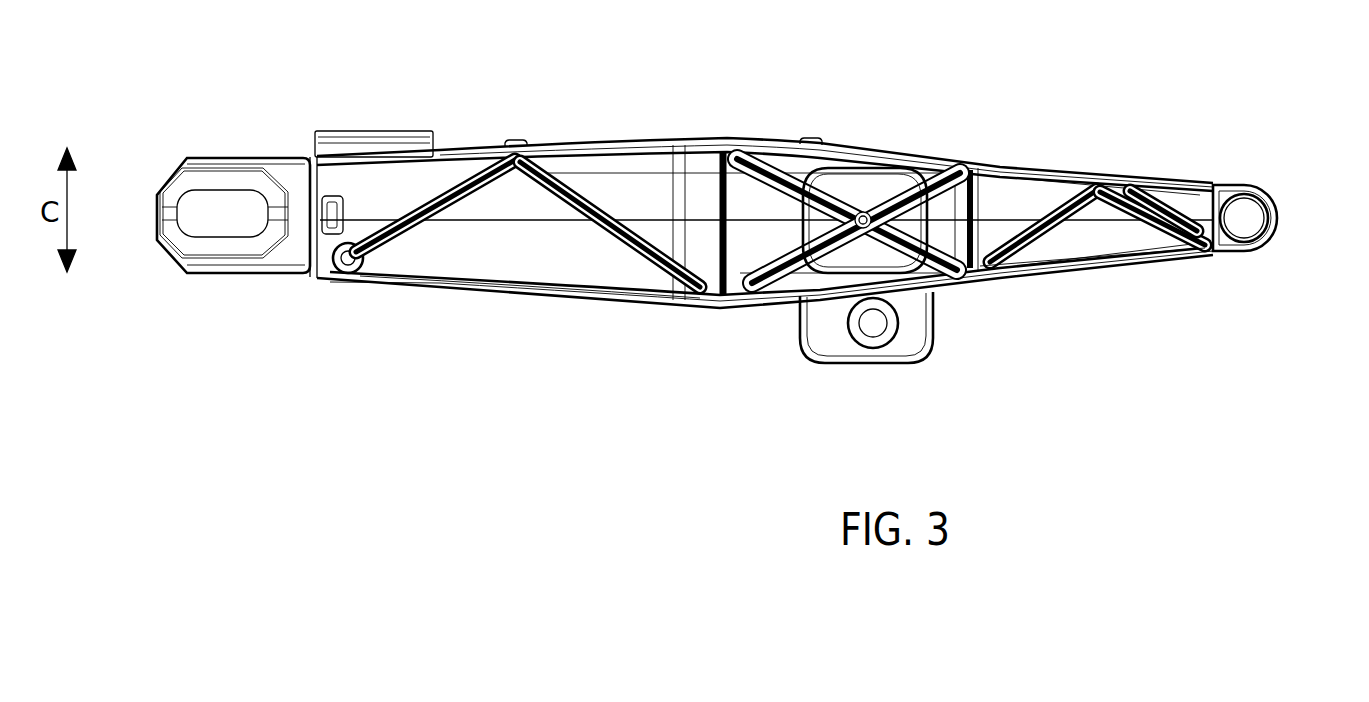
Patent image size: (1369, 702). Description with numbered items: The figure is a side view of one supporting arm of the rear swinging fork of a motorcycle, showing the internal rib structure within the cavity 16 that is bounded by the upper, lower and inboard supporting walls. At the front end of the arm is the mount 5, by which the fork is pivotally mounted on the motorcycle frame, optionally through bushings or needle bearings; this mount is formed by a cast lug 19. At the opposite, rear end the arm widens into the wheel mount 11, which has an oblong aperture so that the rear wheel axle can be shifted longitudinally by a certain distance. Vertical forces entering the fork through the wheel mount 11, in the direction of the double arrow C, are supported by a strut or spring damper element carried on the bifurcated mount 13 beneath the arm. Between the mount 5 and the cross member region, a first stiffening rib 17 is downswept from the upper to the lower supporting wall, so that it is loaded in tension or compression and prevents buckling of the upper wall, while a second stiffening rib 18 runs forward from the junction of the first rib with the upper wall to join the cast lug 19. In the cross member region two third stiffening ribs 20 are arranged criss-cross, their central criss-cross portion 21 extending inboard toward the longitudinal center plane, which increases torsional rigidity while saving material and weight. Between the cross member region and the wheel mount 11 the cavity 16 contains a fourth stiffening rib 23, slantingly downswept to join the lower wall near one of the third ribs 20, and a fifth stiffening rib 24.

The mount 5 is at (1255, 207).
The wheel mount 11 is at (228, 226).
The bifurcated mount 13 is at (913, 338).
The cavity 16 is at (453, 250).
The first stiffening rib 17 is at (1041, 162).
The second stiffening rib 18 is at (1182, 268).
The cast lug 19 is at (1218, 187).
The third stiffening ribs 20 is at (838, 152).
The central criss-cross portion 21 is at (866, 162).
The fourth stiffening rib 23 is at (657, 262).
The fifth stiffening rib 24 is at (453, 148).